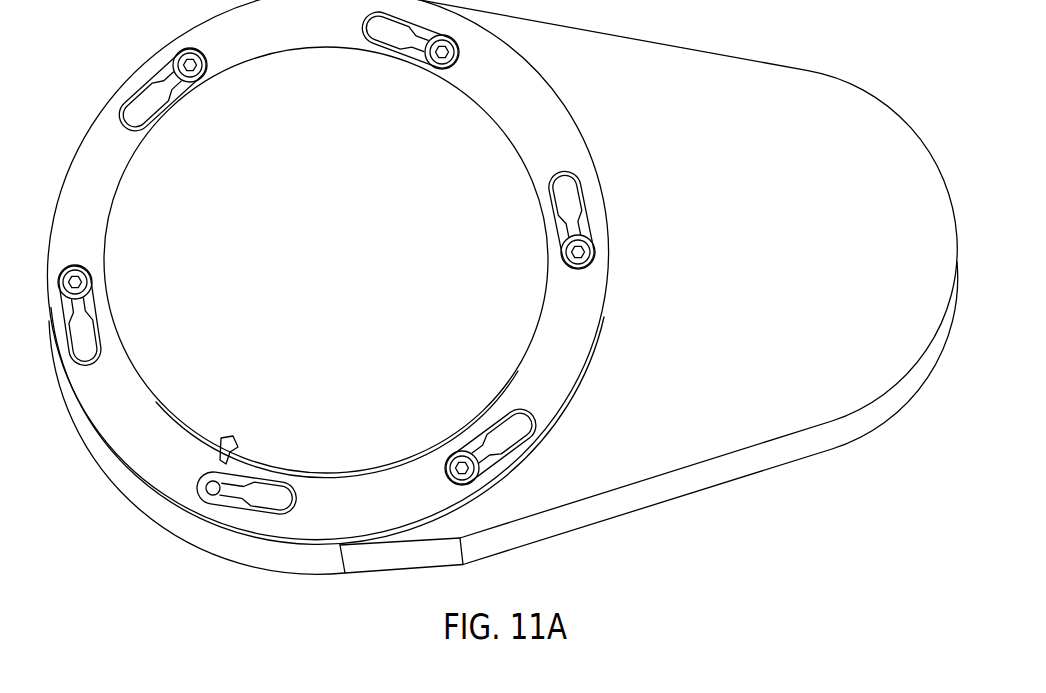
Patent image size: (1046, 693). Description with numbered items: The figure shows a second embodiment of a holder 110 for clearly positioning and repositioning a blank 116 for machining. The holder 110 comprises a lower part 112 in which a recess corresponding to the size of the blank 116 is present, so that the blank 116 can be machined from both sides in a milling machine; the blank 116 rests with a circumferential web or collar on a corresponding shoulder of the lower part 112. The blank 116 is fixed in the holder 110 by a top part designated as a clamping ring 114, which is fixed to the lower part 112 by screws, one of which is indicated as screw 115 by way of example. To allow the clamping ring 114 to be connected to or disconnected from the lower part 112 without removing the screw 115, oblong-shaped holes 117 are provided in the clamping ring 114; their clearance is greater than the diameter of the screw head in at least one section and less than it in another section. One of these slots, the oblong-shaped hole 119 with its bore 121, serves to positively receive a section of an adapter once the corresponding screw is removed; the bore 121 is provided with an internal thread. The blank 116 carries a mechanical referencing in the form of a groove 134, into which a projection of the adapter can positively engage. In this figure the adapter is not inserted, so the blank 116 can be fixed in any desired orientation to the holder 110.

The holder 110 is at (479, 324).
The lower part 112 is at (688, 440).
The clamping ring 114 is at (358, 324).
The screw 115 is at (587, 260).
The blank 116 is at (364, 263).
The oblong-shaped holes 117 is at (570, 207).
The oblong-shaped hole 119 is at (267, 509).
The bore 121 is at (205, 490).
The groove 134 is at (228, 438).